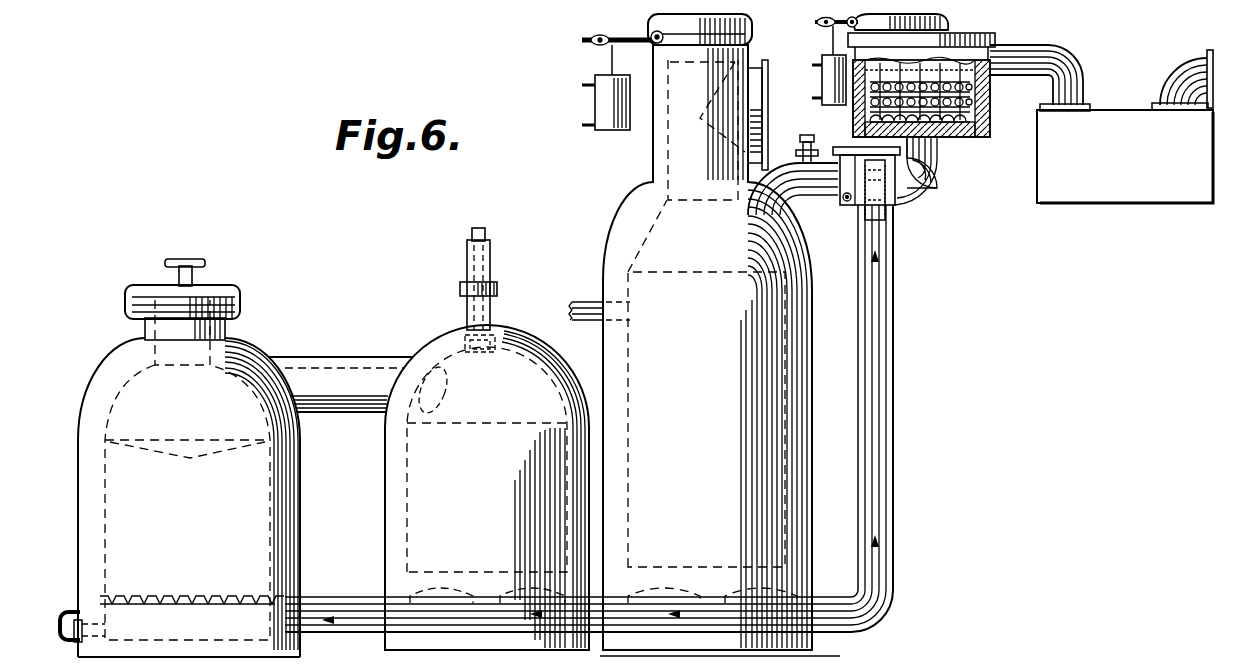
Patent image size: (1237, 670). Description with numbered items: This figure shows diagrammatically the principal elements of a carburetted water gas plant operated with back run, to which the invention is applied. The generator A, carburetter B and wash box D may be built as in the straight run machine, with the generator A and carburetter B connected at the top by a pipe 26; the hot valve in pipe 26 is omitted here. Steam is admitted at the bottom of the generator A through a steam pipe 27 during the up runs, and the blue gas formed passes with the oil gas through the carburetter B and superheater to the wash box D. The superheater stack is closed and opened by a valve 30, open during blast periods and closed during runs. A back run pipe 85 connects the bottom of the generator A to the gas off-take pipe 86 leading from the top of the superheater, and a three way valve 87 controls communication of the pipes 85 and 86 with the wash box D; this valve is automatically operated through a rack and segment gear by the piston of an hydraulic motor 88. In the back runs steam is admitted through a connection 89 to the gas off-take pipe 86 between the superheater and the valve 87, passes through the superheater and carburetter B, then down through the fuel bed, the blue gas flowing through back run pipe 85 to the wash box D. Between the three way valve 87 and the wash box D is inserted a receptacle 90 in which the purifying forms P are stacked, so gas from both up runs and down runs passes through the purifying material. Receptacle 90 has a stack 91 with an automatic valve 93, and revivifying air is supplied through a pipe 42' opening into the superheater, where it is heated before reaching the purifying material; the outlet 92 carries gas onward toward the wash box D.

The pipe 26 is at (332, 357).
The steam pipe 27 is at (68, 607).
The valve 30 is at (735, 28).
The pipe 42' is at (591, 293).
The back run pipe 85 is at (346, 607).
The gas off-take pipe 86 is at (834, 200).
The three way valve 87 is at (897, 198).
The hydraulic motor 88 is at (882, 212).
The connection 89 is at (806, 138).
The receptacle 90 is at (976, 118).
The stack 91 is at (921, 31).
The outlet pipe 92 is at (1066, 58).
The automatic valve 93 is at (940, 20).
The generator A is at (197, 458).
The carburetter B is at (402, 462).
The wash box D is at (1125, 126).
The purifying forms P is at (991, 96).